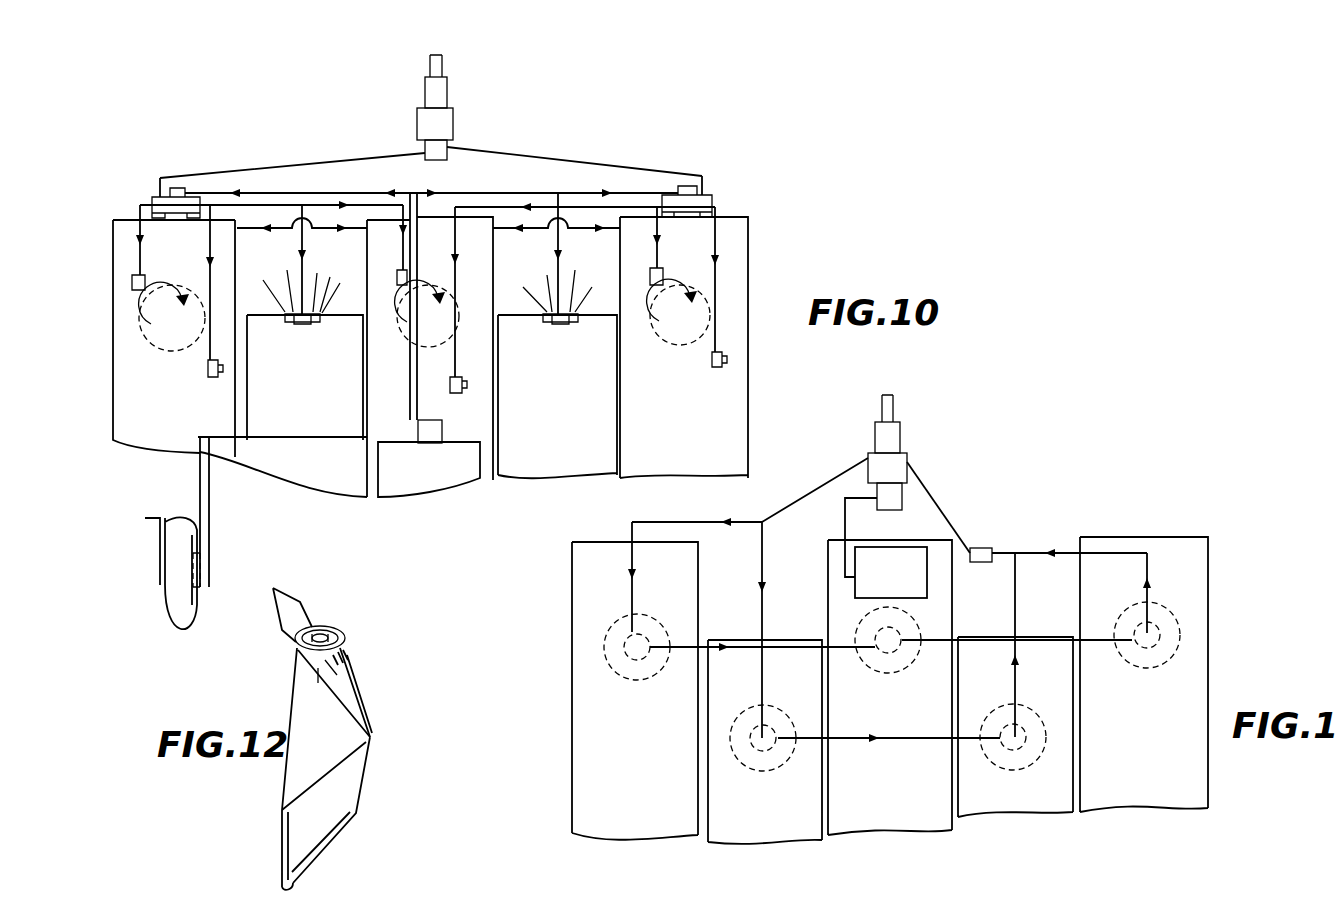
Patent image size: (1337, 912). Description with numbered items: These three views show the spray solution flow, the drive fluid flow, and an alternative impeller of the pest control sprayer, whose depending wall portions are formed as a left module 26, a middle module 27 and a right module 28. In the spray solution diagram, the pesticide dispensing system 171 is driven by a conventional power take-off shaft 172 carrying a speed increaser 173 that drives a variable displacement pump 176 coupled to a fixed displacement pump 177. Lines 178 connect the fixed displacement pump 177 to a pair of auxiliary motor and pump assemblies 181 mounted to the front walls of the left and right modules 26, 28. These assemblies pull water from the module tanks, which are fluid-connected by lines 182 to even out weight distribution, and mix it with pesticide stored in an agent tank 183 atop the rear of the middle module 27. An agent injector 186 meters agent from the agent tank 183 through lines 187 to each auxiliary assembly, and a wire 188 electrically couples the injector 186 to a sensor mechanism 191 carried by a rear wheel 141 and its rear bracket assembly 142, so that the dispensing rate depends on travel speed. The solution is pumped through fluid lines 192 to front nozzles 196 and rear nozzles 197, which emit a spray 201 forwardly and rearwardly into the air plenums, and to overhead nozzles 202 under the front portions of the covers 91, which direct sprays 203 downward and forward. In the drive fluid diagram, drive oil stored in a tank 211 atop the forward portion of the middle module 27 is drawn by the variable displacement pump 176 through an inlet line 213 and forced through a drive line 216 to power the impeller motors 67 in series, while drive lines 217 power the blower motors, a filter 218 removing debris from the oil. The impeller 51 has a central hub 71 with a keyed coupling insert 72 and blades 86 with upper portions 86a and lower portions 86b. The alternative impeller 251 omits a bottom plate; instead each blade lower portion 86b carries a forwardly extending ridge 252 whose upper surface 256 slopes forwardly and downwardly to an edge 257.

In FIG. 10, the left module 26 is at (180, 425).
In FIG. 11, the left module 26 is at (654, 808).
In FIG. 10, the middle module 27 is at (385, 408).
In FIG. 11, the middle module 27 is at (899, 808).
In FIG. 10, the right module 28 is at (692, 423).
In FIG. 11, the right module 28 is at (1151, 758).
In FIG. 10, the impeller 51 is at (172, 352).
In FIG. 11, the impeller 51 is at (648, 612).
In FIG. 11, the hydraulic motor 67 is at (647, 680).
In FIG. 12, the central hub 71 is at (305, 682).
In FIG. 12, the keyed coupling insert 72 is at (340, 633).
In FIG. 12, the blades 86 is at (368, 780).
In FIG. 12, the blade upper portion 86a is at (307, 602).
In FIG. 12, the blade lower portion 86b is at (283, 852).
In FIG. 10, the covers 91 is at (310, 425).
In FIG. 11, the covers 91 is at (776, 808).
In FIG. 10, the rear wheel 141 is at (180, 633).
In FIG. 10, the rear bracket assembly 142 is at (212, 585).
In FIG. 10, the pesticide dispensing system 171 is at (658, 153).
In FIG. 10, the power take-off shaft 172 is at (443, 67).
In FIG. 11, the power take-off shaft 172 is at (895, 407).
In FIG. 10, the speed increaser 173 is at (446, 98).
In FIG. 11, the speed increaser 173 is at (900, 440).
In FIG. 10, the variable displacement pump 176 is at (450, 128).
In FIG. 11, the variable displacement pump 176 is at (907, 465).
In FIG. 10, the fixed displacement pump 177 is at (440, 160).
In FIG. 11, the fixed displacement pump 177 is at (903, 500).
In FIG. 10, the lines 178 is at (347, 157).
In FIG. 10, the auxiliary motor and pump assemblies 181 is at (153, 196).
In FIG. 10, the lines 182 is at (395, 283).
In FIG. 10, the agent tank 183 is at (416, 478).
In FIG. 10, the agent injector 186 is at (430, 434).
In FIG. 10, the lines 187 is at (313, 195).
In FIG. 10, the wire 188 is at (290, 440).
In FIG. 10, the sensor mechanism 191 is at (209, 545).
In FIG. 10, the fluid lines 192 is at (114, 247).
In FIG. 10, the front nozzles 196 is at (134, 290).
In FIG. 10, the rear nozzles 197 is at (210, 377).
In FIG. 10, the spray 201 is at (130, 290).
In FIG. 10, the overhead nozzles 202 is at (302, 325).
In FIG. 10, the sprays 203 is at (298, 312).
In FIG. 11, the tank 211 is at (908, 586).
In FIG. 11, the inlet line 213 is at (852, 498).
In FIG. 11, the drive line 216 is at (720, 522).
In FIG. 11, the drive lines 217 is at (762, 563).
In FIG. 11, the filter 218 is at (992, 550).
In FIG. 12, the impeller 251 is at (372, 668).
In FIG. 12, the ridge 252 is at (318, 860).
In FIG. 12, the upper surface 256 is at (312, 876).
In FIG. 12, the edge 257 is at (340, 840).